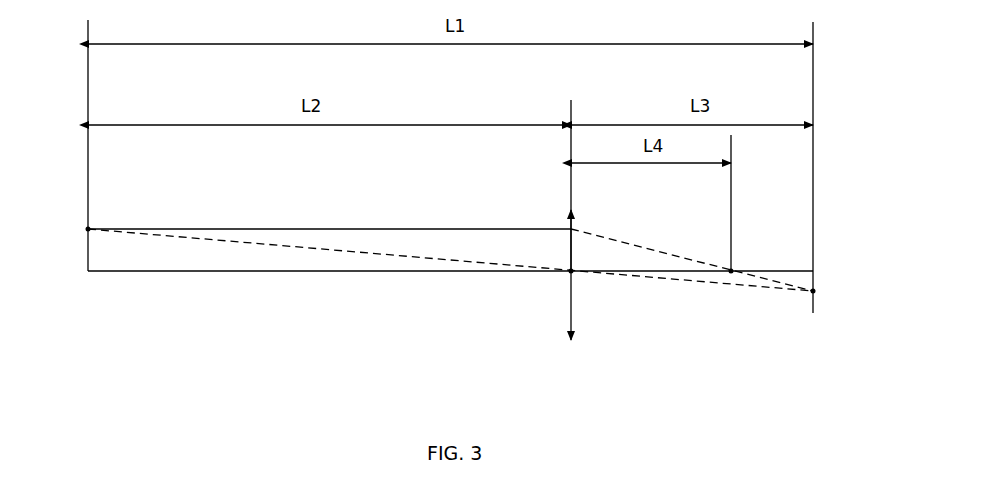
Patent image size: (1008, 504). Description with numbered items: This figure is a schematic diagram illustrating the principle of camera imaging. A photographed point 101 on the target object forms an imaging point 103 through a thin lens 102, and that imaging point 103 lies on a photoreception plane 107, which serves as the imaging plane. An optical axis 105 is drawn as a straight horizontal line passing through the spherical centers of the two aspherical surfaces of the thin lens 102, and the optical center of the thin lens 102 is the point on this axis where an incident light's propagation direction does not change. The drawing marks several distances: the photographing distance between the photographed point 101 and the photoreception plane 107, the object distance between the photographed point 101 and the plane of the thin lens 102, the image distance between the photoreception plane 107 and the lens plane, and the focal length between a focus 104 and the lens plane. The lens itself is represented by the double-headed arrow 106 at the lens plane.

The photographed point 101 is at (86, 244).
The thin lens 102 is at (568, 283).
The imaging point 103 is at (811, 300).
The focus 104 is at (729, 283).
The optical axis 105 is at (335, 283).
The lens 106 is at (568, 350).
The photoreception plane 107 is at (813, 228).